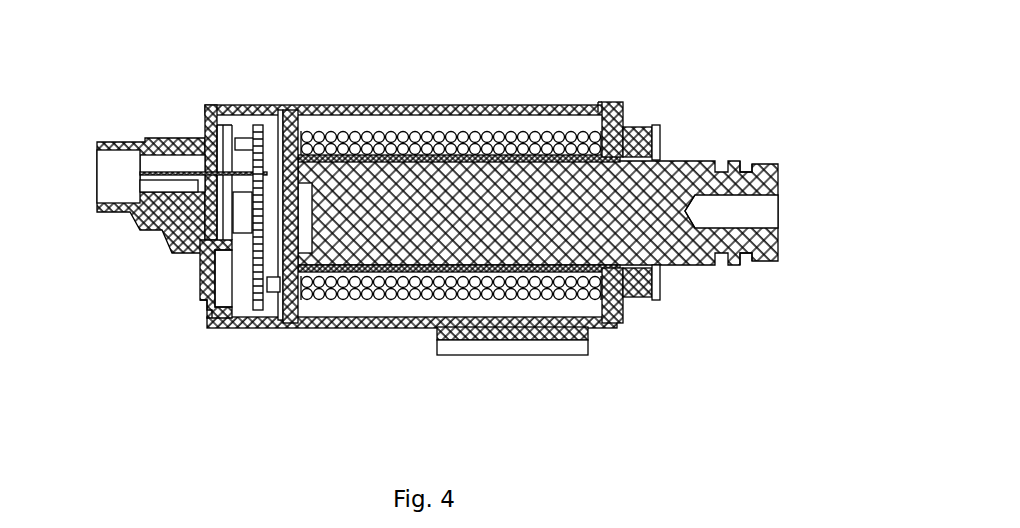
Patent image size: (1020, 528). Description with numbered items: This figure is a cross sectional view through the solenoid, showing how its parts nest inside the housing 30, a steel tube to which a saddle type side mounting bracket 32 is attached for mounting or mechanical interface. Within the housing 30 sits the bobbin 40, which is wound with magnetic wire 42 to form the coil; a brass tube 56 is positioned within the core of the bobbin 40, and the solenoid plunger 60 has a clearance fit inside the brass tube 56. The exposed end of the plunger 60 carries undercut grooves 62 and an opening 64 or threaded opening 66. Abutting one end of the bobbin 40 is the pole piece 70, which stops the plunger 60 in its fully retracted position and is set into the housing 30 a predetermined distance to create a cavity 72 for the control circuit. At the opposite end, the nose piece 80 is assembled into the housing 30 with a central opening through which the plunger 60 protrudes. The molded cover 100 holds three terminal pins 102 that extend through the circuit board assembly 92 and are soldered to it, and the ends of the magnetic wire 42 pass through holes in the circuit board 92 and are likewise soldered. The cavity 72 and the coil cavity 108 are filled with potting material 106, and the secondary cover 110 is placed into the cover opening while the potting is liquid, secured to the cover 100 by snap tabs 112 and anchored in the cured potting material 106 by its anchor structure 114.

The housing 30 is at (363, 105).
The side mounting bracket 32 is at (530, 340).
The bobbin 40 is at (478, 145).
The magnetic wire 42 is at (425, 145).
The brass tube 56 is at (612, 107).
The solenoid plunger 60 is at (690, 158).
The undercut grooves 62 is at (738, 170).
The opening 64 is at (778, 205).
The threaded opening 66 is at (731, 211).
The pole piece 70 is at (290, 120).
The cavity 72 is at (268, 302).
The nose piece 80 is at (638, 300).
The circuit board assembly 92 is at (265, 137).
The cover 100 is at (205, 133).
The terminal pins 102 is at (183, 160).
The potting material 106 is at (238, 148).
The coil cavity 108 is at (542, 122).
The secondary cover 110 is at (197, 283).
The snap tabs 112 is at (229, 315).
The anchor structure 114 is at (233, 287).